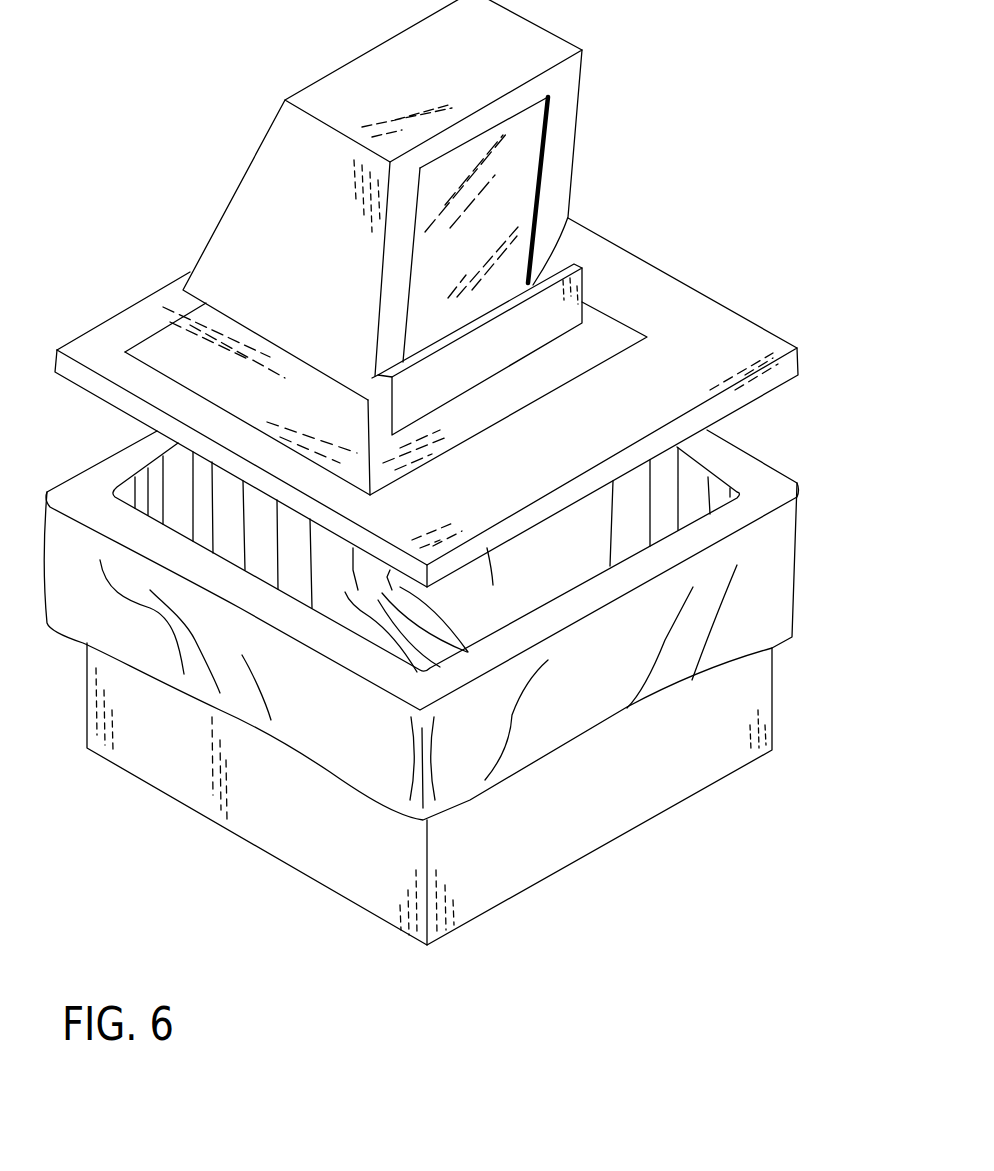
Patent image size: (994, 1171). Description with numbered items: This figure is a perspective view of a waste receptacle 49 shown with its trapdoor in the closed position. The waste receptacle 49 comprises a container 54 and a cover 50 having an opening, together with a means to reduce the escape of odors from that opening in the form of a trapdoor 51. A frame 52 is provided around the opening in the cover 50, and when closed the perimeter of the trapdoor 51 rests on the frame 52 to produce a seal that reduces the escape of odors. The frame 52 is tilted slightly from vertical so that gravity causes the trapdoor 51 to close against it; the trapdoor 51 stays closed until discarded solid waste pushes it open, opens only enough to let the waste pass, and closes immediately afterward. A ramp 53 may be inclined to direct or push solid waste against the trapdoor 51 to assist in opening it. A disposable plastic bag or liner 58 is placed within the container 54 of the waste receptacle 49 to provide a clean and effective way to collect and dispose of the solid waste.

The waste receptacle 49 is at (112, 87).
The cover 50 is at (703, 290).
The trapdoor 51 is at (493, 247).
The frame 52 is at (562, 127).
The ramp 53 is at (568, 218).
The container 54 is at (772, 684).
The liner 58 is at (770, 572).